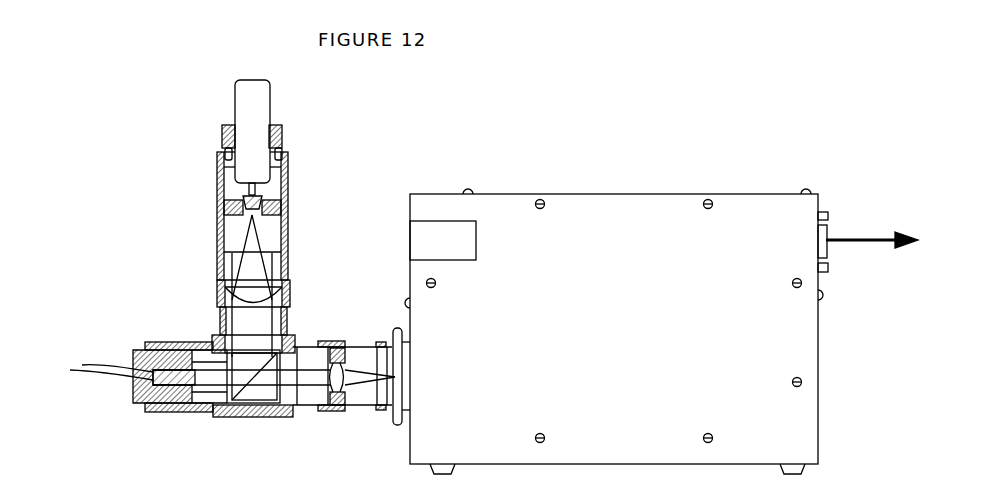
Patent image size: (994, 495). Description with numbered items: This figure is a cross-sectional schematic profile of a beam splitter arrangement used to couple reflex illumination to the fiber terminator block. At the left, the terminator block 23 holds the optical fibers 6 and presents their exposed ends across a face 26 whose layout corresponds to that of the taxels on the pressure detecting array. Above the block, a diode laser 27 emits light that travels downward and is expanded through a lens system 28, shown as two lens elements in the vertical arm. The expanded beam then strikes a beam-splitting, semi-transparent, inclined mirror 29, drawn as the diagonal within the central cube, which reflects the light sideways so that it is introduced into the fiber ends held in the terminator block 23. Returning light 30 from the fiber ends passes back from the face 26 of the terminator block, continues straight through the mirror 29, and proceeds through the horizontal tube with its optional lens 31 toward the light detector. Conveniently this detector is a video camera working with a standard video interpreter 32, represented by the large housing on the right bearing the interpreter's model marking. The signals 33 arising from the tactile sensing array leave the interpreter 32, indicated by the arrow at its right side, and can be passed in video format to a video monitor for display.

The optical fibers 6 is at (102, 378).
The terminator block 23 is at (178, 386).
The face 26 is at (197, 379).
The diode laser 27 is at (258, 107).
The lens system 28 is at (260, 210).
The inclined mirror 29 is at (253, 379).
The returning light 30 is at (312, 379).
The focusing lens 31 is at (340, 379).
The VE-262 interpreter 32 is at (638, 192).
The signals 33 is at (893, 232).